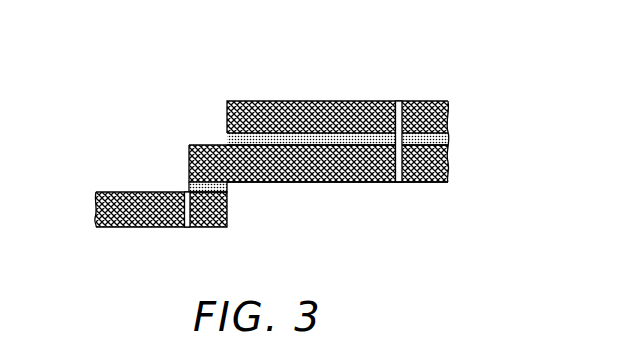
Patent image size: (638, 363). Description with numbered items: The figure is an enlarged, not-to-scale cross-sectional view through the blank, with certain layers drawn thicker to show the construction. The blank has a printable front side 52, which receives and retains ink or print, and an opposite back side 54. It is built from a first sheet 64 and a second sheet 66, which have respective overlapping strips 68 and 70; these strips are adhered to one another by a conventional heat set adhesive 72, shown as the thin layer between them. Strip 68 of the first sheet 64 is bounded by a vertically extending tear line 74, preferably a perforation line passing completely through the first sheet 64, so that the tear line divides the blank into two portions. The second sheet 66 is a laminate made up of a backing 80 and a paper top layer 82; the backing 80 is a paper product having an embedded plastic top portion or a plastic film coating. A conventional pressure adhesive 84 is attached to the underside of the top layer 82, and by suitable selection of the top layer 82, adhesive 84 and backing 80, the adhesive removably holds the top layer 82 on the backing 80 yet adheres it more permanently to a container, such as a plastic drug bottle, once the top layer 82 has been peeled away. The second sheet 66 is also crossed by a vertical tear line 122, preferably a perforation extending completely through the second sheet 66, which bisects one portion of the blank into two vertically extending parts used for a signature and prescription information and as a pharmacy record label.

The front side 52 is at (285, 165).
The back side 54 is at (302, 188).
The first sheet 64 is at (149, 230).
The second sheet 66 is at (341, 136).
The overlapping strip 68 is at (214, 228).
The overlapping strip 70 is at (190, 147).
The heat set adhesive 72 is at (228, 186).
The tear line 74 is at (156, 229).
The backing 80 is at (293, 173).
The paper top layer 82 is at (321, 101).
The pressure adhesive 84 is at (449, 140).
The tear line 122 is at (401, 101).